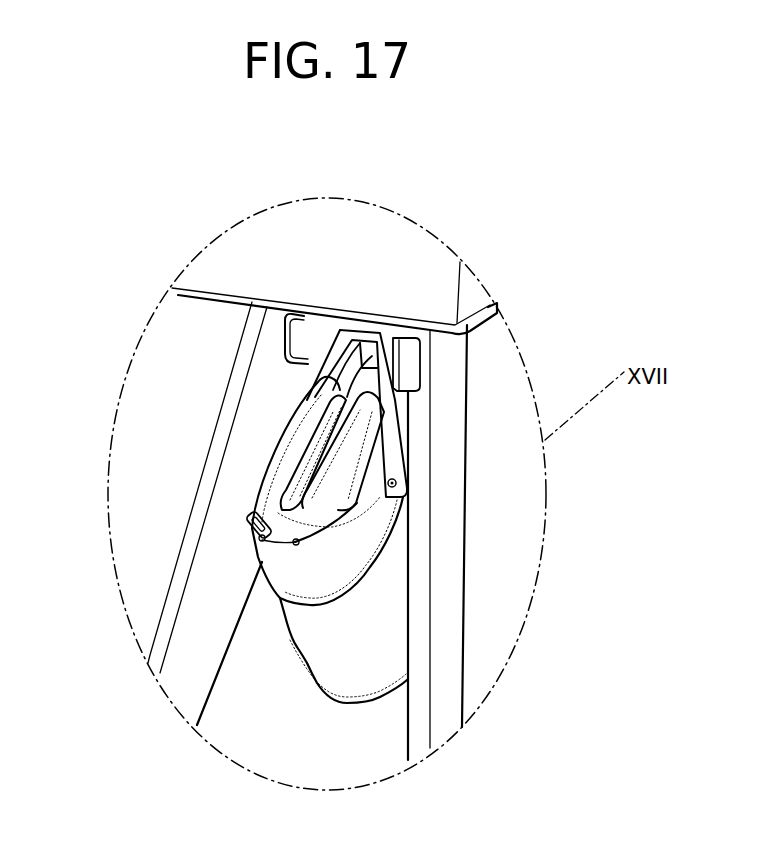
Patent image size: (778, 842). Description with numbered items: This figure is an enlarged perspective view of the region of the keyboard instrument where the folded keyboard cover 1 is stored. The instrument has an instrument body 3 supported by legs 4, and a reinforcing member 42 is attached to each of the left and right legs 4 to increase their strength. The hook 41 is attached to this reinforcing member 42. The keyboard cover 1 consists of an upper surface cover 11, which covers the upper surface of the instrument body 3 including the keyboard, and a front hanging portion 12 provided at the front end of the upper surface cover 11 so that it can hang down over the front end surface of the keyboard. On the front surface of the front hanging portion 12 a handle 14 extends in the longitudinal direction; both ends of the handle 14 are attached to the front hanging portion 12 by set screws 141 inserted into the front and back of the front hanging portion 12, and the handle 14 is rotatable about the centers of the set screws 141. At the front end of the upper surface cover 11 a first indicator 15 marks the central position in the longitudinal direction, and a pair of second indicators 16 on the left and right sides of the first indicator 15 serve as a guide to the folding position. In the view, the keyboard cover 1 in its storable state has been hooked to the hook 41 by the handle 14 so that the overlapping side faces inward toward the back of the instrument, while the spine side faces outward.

The keyboard cover 1 is at (319, 545).
The instrument body 3 is at (213, 262).
The legs 4 is at (468, 660).
The upper surface cover 11 is at (327, 658).
The front hanging portion 12 is at (283, 575).
The handle 14 is at (468, 438).
The set screws 141 is at (396, 485).
The first indicator 15 is at (263, 537).
The second indicators 16 is at (247, 518).
The hook 41 is at (365, 350).
The reinforcing member 42 is at (393, 343).